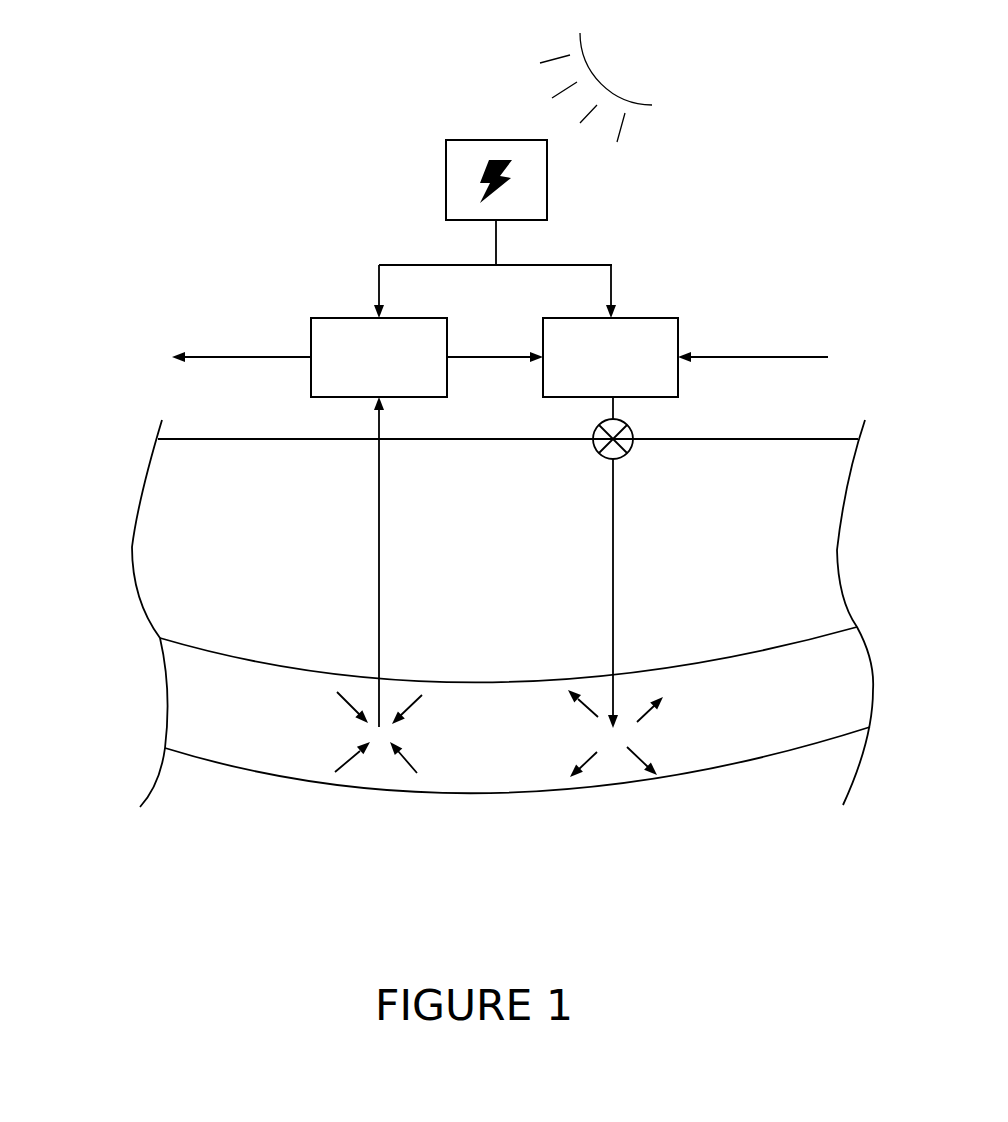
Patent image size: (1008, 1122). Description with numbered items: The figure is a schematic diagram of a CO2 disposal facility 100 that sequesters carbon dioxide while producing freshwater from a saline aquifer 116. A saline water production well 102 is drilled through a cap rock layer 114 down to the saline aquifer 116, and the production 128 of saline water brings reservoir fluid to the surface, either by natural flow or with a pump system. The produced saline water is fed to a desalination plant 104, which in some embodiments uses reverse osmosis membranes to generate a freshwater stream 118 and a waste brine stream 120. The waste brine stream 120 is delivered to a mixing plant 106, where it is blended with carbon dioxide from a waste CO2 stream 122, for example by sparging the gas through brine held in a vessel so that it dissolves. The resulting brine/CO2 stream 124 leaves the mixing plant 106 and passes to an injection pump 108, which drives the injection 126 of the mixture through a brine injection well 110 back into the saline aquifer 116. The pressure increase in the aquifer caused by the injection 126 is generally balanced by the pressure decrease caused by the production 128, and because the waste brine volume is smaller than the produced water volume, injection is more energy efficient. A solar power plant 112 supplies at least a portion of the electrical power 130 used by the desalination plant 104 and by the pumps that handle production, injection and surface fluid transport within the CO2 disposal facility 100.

The CO2 disposal facility 100 is at (460, 504).
The saline water production well 102 is at (380, 578).
The desalination plant 104 is at (341, 318).
The mixing plant 106 is at (641, 318).
The injection pump 108 is at (625, 455).
The brine injection well 110 is at (616, 600).
The solar power plant 112 is at (465, 140).
The cap rock layer 114 is at (162, 512).
The saline aquifer 116 is at (186, 690).
The freshwater stream 118 is at (226, 356).
The waste brine stream 120 is at (497, 360).
The waste CO2 stream 122 is at (760, 357).
The brine/CO2 stream 124 is at (617, 408).
The injection 126 is at (613, 770).
The production of saline water 128 is at (375, 770).
The electrical power 130 is at (495, 231).